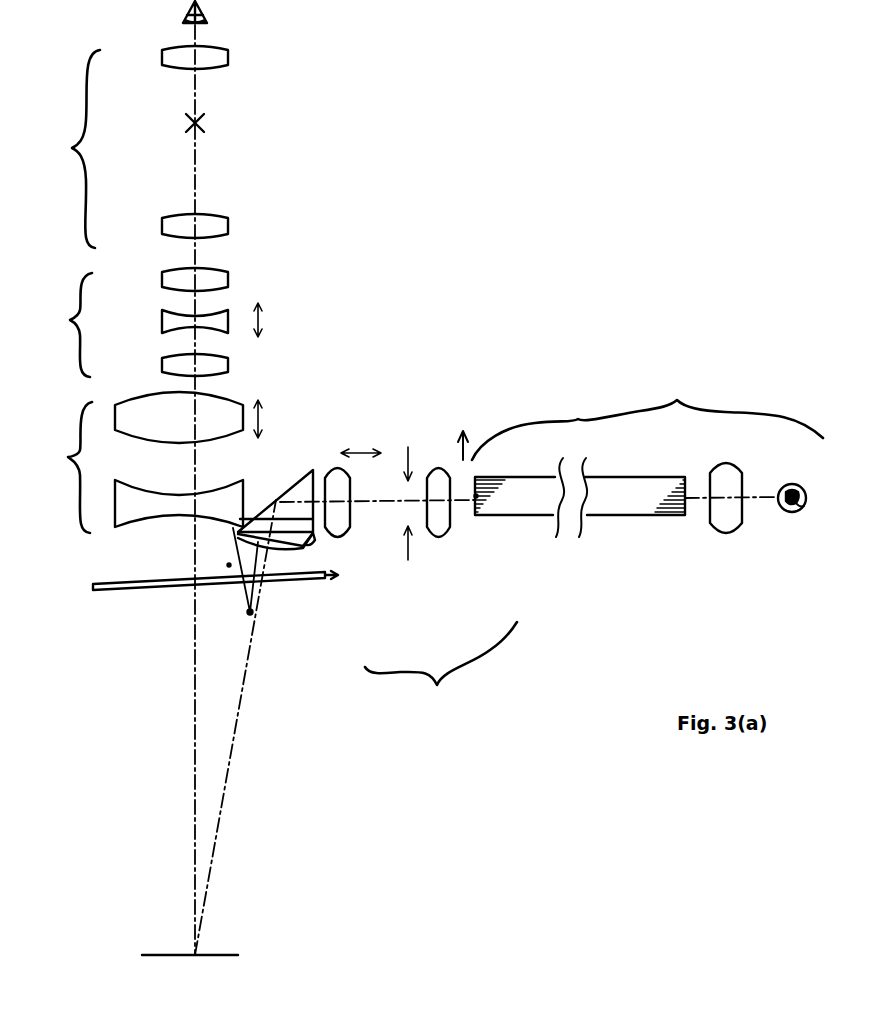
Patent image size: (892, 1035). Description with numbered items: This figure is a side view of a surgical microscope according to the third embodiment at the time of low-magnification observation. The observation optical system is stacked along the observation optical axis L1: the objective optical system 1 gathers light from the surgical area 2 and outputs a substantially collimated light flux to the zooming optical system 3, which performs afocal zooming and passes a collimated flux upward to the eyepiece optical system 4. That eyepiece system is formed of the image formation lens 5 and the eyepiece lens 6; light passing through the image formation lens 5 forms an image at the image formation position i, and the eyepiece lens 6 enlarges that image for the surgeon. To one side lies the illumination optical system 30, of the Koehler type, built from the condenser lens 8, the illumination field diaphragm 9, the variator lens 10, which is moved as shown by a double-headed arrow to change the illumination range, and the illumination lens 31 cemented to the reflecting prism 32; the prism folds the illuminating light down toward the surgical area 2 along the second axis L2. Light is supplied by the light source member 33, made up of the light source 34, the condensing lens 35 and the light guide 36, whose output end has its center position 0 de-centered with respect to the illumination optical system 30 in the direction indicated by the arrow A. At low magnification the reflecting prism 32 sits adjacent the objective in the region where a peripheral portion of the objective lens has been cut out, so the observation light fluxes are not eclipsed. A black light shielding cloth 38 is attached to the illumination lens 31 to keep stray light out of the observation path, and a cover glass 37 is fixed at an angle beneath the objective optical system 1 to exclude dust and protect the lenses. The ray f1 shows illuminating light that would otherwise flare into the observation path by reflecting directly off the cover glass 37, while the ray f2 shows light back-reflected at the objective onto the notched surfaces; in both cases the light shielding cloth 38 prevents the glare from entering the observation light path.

The objective optical system 1 is at (146, 462).
The zooming optical system 3 is at (146, 322).
The eyepiece optical system 4 is at (65, 149).
The image formation lens 5 is at (165, 228).
The eyepiece lens 6 is at (165, 60).
The image formation position i is at (203, 125).
The surgical area 2 is at (201, 958).
The observation optical axis L1 is at (190, 780).
The second optical axis L2 is at (222, 790).
The light shielding cloth 38 is at (238, 533).
The cover glass 37 is at (93, 590).
The illumination lens 31 is at (301, 547).
The reflecting prism 32 is at (307, 546).
The ray f1 is at (250, 614).
The ray f2 is at (228, 567).
The variator lens 10 is at (345, 538).
The illumination field diaphragm 9 is at (411, 563).
The condenser lens 8 is at (445, 540).
The center position of the output end of the light guide 0 is at (475, 495).
The arrow A is at (469, 434).
The light source member 33 is at (647, 416).
The light guide 36 is at (625, 477).
The condensing lens 35 is at (718, 464).
The light source 34 is at (784, 484).
The illumination optical system 30 is at (441, 673).